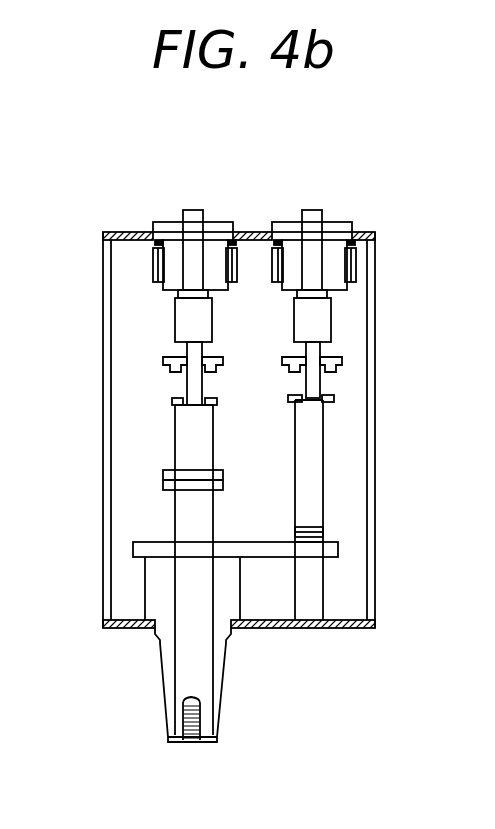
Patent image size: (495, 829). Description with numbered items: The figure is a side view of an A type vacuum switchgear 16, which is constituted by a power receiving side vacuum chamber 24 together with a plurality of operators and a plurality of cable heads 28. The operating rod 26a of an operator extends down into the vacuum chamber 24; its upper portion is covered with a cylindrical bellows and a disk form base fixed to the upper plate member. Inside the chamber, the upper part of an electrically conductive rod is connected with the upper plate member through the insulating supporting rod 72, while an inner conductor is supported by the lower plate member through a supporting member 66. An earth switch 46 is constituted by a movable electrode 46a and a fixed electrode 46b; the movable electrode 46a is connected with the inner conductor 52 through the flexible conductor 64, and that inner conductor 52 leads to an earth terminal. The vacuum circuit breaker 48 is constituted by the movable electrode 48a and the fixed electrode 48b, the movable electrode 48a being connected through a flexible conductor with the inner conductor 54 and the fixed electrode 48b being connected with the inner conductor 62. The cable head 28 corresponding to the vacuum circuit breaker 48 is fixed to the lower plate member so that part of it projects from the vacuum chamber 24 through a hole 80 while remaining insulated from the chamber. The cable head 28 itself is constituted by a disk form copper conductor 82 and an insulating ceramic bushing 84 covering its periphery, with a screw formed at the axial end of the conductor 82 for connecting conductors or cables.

The A type vacuum switchgear 16 is at (131, 134).
The power receiving side vacuum chamber 24 is at (375, 371).
The operating rod 26a is at (198, 215).
The cable head 28 is at (152, 680).
The earth switch 46 is at (376, 510).
The movable electrode 46a is at (300, 527).
The fixed electrode 46b is at (310, 540).
The vacuum circuit breaker 48 is at (131, 558).
The movable electrode 48a is at (192, 472).
The fixed electrode 48b is at (168, 486).
The inner conductor 52 is at (343, 358).
The inner conductor 54 is at (223, 361).
The inner conductor 62 is at (260, 541).
The flexible conductor 64 is at (335, 396).
The supporting member 66 is at (318, 597).
The insulating supporting rod 72 is at (303, 313).
The hole 80 is at (155, 636).
The disk form copper conductor 82 is at (200, 683).
The insulating ceramic bushing 84 is at (217, 667).